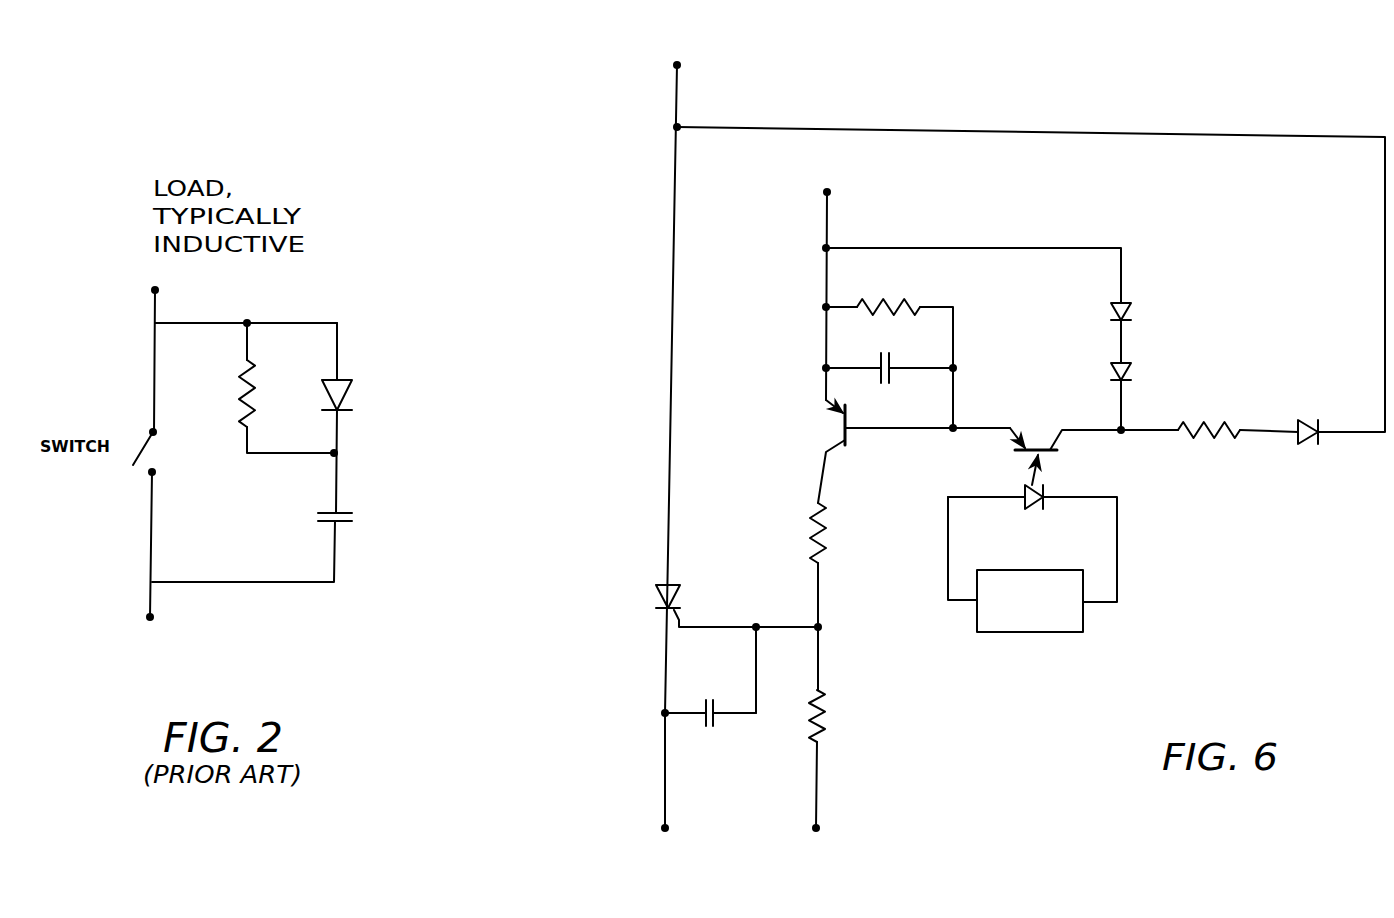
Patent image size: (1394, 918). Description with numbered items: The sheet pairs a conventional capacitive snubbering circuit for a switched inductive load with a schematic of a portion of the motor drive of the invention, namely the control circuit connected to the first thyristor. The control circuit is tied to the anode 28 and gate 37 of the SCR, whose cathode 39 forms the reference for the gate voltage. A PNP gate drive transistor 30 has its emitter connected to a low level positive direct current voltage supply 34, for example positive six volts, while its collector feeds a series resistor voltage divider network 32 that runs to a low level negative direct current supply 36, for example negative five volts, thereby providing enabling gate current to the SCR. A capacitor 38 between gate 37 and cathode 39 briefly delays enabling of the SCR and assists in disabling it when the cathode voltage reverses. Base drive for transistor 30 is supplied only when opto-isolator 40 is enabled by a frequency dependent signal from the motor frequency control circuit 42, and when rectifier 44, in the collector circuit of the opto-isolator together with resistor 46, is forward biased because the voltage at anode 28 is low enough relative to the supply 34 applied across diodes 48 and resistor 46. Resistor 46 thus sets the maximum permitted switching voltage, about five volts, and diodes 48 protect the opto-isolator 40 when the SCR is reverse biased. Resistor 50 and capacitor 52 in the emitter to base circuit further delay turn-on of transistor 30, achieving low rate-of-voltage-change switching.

The anode 28 is at (680, 62).
The PNP gate drive transistor 30 is at (808, 425).
The series resistor voltage divider network 32 is at (792, 522).
The low level positive direct current voltage supply 34 is at (830, 190).
The low level negative direct current supply 36 is at (818, 832).
The gate 37 is at (756, 612).
The capacitor 38 is at (715, 723).
The cathode 39 is at (668, 832).
The opto-isolator 40 is at (1070, 462).
The motor frequency control circuit 42 is at (1030, 633).
The rectifier 44 is at (1305, 445).
The resistor 46 is at (1198, 438).
The diodes 48 is at (1153, 333).
The resistor 50 is at (893, 313).
The capacitor 52 is at (892, 360).